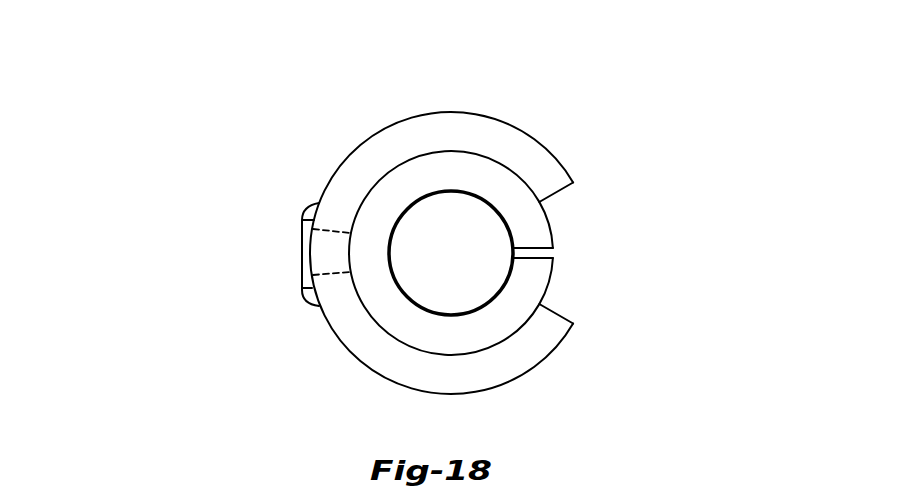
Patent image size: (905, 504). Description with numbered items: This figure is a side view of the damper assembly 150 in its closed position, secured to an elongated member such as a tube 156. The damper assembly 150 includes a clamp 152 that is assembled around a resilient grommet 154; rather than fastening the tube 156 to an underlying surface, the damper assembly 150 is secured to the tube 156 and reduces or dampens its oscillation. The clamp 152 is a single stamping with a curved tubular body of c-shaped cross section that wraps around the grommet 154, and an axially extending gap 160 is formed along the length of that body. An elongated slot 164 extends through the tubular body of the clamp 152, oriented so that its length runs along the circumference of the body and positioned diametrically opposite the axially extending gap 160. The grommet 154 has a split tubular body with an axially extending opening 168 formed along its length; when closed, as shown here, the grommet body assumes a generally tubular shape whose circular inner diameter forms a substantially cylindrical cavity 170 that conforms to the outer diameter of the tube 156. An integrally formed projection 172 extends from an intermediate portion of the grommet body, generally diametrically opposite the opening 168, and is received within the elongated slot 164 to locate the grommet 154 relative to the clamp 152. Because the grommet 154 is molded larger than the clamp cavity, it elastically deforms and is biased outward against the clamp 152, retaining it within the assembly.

The damper assembly 150 is at (127, 197).
The clamp 152 is at (463, 107).
The grommet 154 is at (505, 165).
The tube 156 is at (498, 209).
The axially extending gap 160 is at (557, 193).
The elongated slot 164 is at (333, 278).
The axially extending opening 168 is at (553, 248).
The cylindrical cavity 170 is at (427, 197).
The projection 172 is at (302, 246).